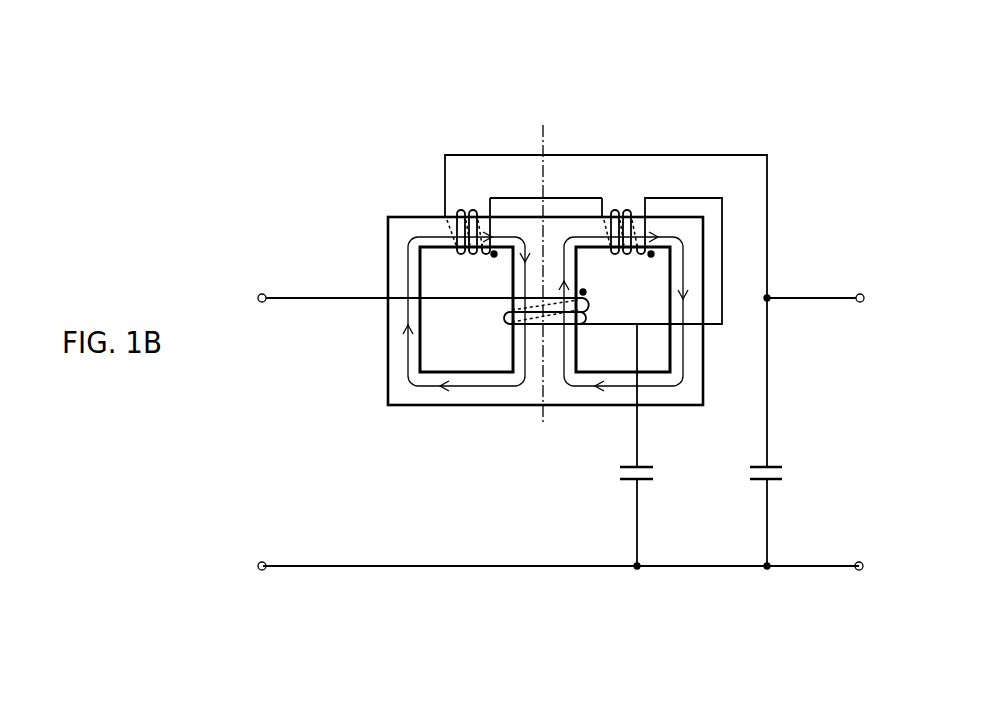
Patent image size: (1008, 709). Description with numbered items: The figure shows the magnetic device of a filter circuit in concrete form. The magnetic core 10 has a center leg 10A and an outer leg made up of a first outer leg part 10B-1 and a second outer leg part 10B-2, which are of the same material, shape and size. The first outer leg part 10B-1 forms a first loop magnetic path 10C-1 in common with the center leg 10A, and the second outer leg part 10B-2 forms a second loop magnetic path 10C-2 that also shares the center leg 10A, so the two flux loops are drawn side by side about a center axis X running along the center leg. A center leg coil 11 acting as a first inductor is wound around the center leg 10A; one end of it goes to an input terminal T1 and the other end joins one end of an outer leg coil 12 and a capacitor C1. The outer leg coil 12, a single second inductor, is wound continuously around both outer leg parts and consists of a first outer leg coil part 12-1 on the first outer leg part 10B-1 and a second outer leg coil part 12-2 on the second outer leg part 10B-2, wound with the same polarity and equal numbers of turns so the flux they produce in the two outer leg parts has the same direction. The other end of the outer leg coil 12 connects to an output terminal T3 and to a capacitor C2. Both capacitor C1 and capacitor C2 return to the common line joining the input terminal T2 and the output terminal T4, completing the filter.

The magnetic core 10 is at (364, 209).
The center leg 10A is at (553, 291).
The first outer leg part 10B-1 is at (397, 252).
The second outer leg part 10B-2 is at (692, 253).
The first loop magnetic path 10C-1 is at (403, 358).
The second loop magnetic path 10C-2 is at (684, 358).
The center leg coil 11 is at (550, 332).
The outer leg coil 12 is at (658, 85).
The first outer leg coil part 12-1 is at (472, 183).
The second outer leg coil part 12-2 is at (628, 183).
The capacitor C1 is at (658, 387).
The capacitor C2 is at (777, 483).
The input terminal T1 is at (262, 303).
The input terminal T2 is at (262, 571).
The output terminal T3 is at (860, 303).
The output terminal T4 is at (859, 571).
The center axis X is at (542, 422).